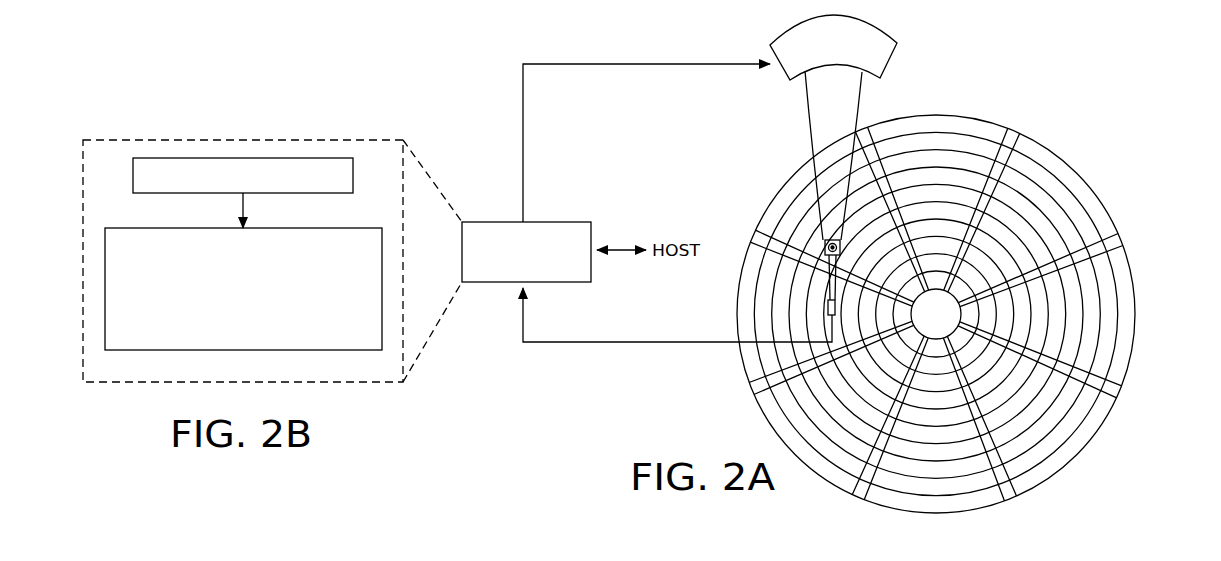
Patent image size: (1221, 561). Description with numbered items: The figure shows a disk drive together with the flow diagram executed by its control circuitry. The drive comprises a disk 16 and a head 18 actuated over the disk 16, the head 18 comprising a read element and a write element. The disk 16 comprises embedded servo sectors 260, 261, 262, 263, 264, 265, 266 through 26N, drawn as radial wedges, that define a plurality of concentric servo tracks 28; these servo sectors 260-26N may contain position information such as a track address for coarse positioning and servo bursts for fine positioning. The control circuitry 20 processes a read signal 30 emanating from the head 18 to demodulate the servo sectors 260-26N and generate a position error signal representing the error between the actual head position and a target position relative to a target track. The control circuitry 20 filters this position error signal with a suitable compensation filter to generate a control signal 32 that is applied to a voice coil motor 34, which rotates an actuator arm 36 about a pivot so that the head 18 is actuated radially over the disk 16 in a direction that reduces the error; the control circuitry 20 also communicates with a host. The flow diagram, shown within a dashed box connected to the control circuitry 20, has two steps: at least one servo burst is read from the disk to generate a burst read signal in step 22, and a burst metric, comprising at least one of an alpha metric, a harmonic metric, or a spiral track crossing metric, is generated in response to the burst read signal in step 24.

In FIG. 2A, the disk 16 is at (936, 293).
In FIG. 2A, the head 18 is at (824, 315).
In FIG. 2A, the control circuitry 20 is at (561, 222).
In FIG. 2B, the read servo burst step 22 is at (325, 193).
In FIG. 2B, the generate burst metric step 24 is at (325, 350).
In FIG. 2A, the servo sector 26N is at (868, 132).
In FIG. 2A, the servo sector 260 is at (1016, 135).
In FIG. 2A, the servo sector 261 is at (1118, 242).
In FIG. 2A, the servo sector 262 is at (1122, 392).
In FIG. 2A, the servo sector 263 is at (1005, 492).
In FIG. 2A, the servo sector 264 is at (858, 492).
In FIG. 2A, the servo sector 265 is at (752, 390).
In FIG. 2A, the servo sector 266 is at (750, 238).
In FIG. 2A, the servo tracks 28 is at (939, 130).
In FIG. 2A, the read signal 30 is at (644, 342).
In FIG. 2A, the control signal 32 is at (523, 130).
In FIG. 2A, the voice coil motor 34 is at (785, 78).
In FIG. 2A, the actuator arm 36 is at (815, 135).